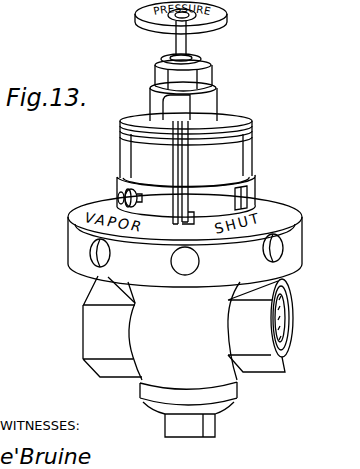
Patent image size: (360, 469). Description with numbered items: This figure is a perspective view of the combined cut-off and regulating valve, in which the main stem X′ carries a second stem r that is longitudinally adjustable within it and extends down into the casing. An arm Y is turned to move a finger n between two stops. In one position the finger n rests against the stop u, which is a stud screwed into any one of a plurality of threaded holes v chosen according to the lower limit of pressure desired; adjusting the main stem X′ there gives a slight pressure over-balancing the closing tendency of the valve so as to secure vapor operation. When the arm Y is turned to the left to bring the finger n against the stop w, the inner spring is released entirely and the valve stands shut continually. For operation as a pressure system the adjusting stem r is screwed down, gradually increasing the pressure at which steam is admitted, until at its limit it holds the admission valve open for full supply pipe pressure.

The main stem X′ is at (173, 57).
The second stem r is at (187, 39).
The arm Y is at (198, 113).
The finger n is at (183, 170).
The stop w is at (247, 192).
The stop u is at (125, 194).
The threaded holes v is at (117, 200).